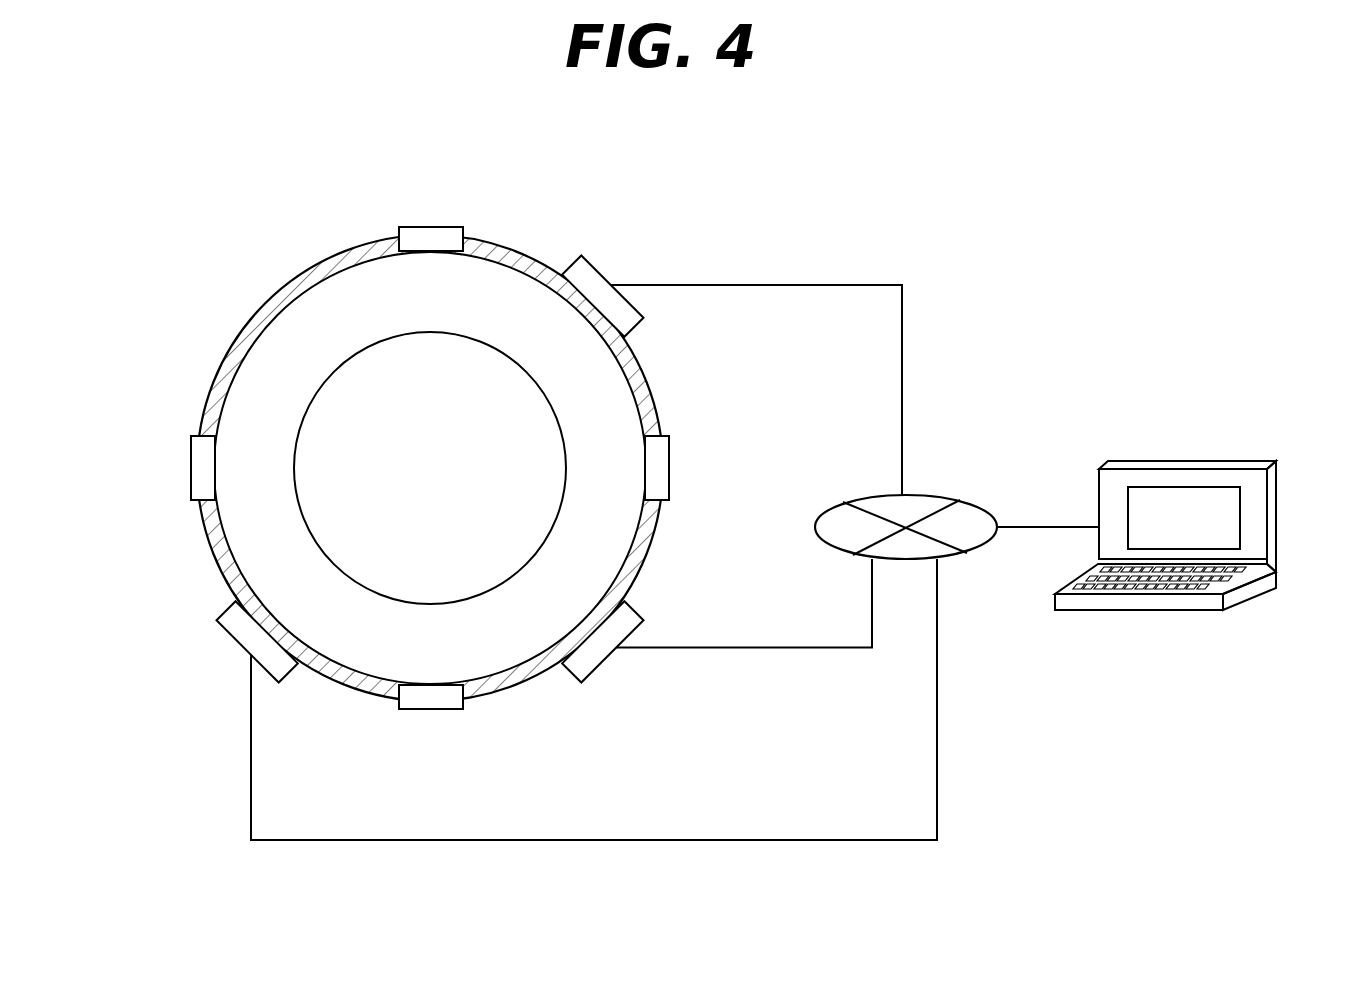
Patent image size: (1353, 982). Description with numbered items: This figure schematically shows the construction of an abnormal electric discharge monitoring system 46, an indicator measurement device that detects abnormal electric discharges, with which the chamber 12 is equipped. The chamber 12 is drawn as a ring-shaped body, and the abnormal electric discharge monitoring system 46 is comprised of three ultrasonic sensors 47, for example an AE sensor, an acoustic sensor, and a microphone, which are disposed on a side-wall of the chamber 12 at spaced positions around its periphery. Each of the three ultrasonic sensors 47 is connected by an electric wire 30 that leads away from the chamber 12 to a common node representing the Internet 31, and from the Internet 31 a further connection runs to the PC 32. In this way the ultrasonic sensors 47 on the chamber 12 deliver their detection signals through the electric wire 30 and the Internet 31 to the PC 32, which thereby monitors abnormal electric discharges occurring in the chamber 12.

The abnormal electric discharge monitoring system 46 is at (585, 137).
The chamber 12 is at (163, 579).
The ultrasonic sensors 47 is at (640, 324).
The electric wire 30 is at (827, 284).
The Internet 31 is at (927, 494).
The PC 32 is at (1248, 592).